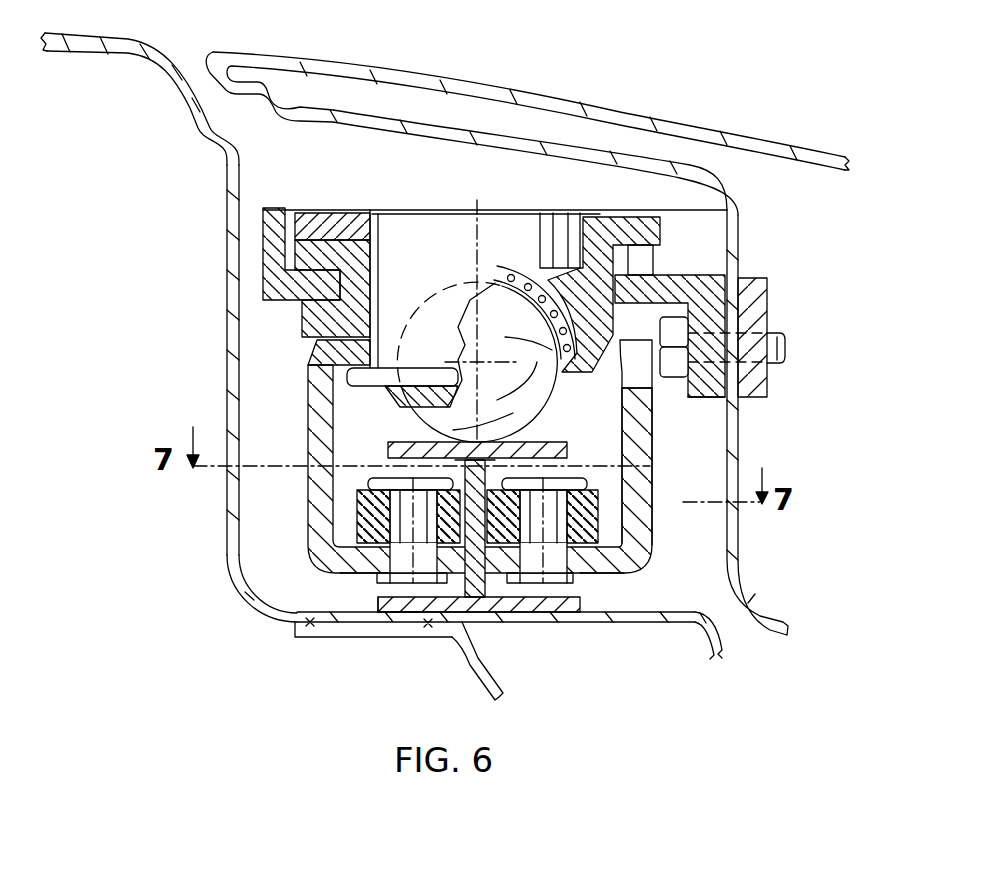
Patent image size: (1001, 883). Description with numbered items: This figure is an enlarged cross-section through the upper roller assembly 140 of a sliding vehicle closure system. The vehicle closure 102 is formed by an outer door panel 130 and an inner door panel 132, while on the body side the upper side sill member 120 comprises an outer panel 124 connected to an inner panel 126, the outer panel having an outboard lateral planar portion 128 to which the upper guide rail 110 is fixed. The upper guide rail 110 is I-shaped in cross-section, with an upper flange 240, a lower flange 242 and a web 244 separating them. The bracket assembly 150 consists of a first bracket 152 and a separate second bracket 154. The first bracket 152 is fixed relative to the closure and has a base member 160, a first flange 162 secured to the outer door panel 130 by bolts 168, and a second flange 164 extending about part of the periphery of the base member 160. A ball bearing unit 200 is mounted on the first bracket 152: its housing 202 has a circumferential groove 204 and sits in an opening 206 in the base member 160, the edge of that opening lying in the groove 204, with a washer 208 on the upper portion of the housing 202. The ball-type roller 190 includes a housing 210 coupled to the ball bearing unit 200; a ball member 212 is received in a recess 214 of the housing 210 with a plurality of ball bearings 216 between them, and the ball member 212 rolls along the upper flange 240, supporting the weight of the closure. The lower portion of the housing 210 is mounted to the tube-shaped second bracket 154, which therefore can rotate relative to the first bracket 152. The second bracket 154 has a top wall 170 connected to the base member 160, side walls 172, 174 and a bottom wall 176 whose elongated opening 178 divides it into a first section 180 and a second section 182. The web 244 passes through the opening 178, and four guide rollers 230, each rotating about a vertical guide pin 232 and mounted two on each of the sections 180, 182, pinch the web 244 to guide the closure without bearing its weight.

The vehicle closure 102 is at (813, 147).
The upper guide rail 110 is at (533, 612).
The upper side sill member 120 is at (478, 443).
The outer panel 124 is at (227, 343).
The inner panel 126 is at (473, 670).
The outboard lateral planar portion 128 is at (620, 618).
The outer door panel 130 is at (763, 138).
The inner door panel 132 is at (740, 583).
The upper guide roller 140 is at (527, 116).
The bracket assembly 150 is at (252, 256).
The first bracket 152 is at (273, 248).
The second bracket 154 is at (303, 520).
The base member 160 is at (300, 287).
The first flange 162 is at (703, 390).
The second flange 164 is at (277, 217).
The bolts 168 is at (777, 332).
The top wall 170 is at (347, 352).
The side wall 172 is at (485, 529).
The side wall 174 is at (637, 460).
The bottom wall 176 is at (287, 618).
The elongated opening 178 is at (468, 607).
The first section 180 is at (367, 563).
The second section 182 is at (580, 563).
The ball-type roller 190 is at (407, 423).
The ball bearing unit 200 is at (495, 246).
The housing 202 is at (650, 262).
The circumferential groove 204 is at (585, 300).
The opening 206 is at (372, 277).
The washer 208 is at (623, 280).
The housing 210 is at (500, 230).
The ball member 212 is at (498, 412).
The recess 214 is at (477, 362).
The ball bearings 216 is at (551, 262).
The guide rollers 230 is at (353, 528).
The guide pin 232 is at (360, 495).
The upper flange 240 is at (600, 450).
The lower flange 242 is at (390, 603).
The web 244 is at (475, 558).